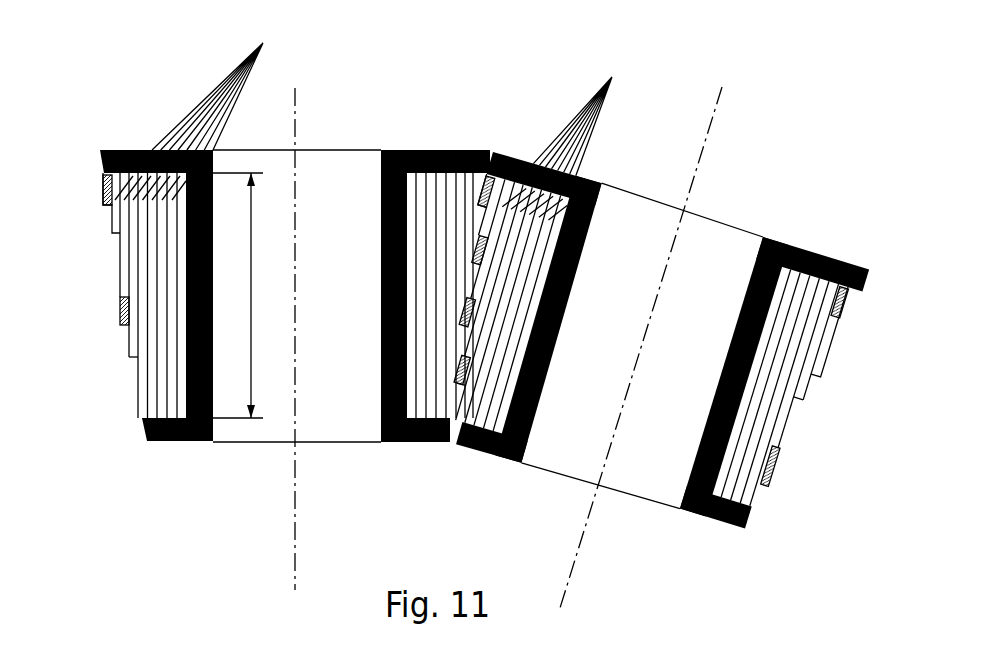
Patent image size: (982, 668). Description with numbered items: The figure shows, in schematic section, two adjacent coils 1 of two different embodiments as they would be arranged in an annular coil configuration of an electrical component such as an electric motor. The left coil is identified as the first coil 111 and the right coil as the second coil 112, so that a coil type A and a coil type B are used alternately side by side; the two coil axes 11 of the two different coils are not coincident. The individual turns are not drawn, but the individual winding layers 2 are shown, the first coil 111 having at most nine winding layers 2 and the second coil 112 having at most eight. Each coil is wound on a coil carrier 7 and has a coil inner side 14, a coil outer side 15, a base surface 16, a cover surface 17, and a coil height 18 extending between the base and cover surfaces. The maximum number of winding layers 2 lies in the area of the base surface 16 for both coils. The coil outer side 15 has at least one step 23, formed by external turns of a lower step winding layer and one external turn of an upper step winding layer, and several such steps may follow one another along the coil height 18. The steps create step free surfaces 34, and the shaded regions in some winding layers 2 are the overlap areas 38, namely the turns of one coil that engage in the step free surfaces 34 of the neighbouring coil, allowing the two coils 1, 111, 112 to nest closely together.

The coil 1 is at (488, 329).
The first coil 111 is at (377, 110).
The second coil 112 is at (510, 118).
The winding layers 2 is at (394, 103).
The coil carrier 7 is at (480, 447).
The coil axis 11 is at (299, 225).
The coil inner side 14 is at (185, 250).
The coil outer side 15 is at (112, 312).
The base surface 16 is at (112, 178).
The cover surface 17 is at (142, 414).
The coil height 18 is at (238, 295).
The step 23 is at (110, 208).
The step free surfaces 34 is at (457, 357).
The overlap areas 38 is at (482, 248).